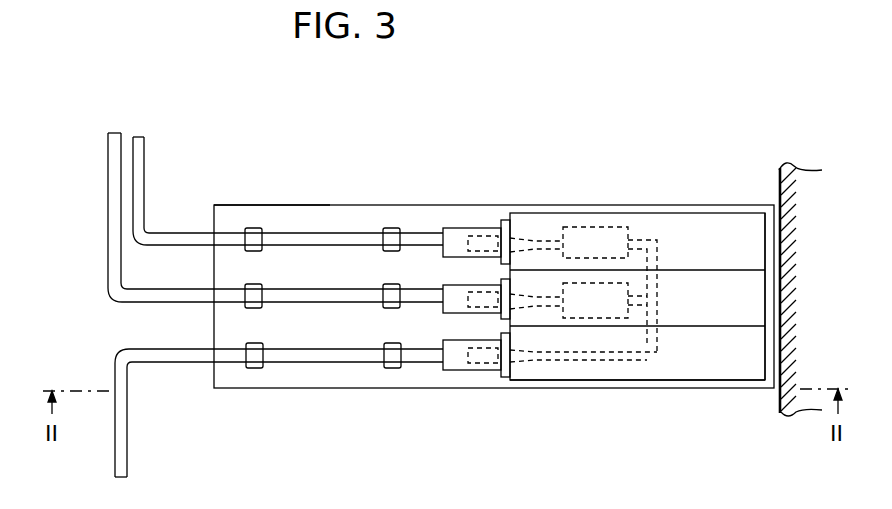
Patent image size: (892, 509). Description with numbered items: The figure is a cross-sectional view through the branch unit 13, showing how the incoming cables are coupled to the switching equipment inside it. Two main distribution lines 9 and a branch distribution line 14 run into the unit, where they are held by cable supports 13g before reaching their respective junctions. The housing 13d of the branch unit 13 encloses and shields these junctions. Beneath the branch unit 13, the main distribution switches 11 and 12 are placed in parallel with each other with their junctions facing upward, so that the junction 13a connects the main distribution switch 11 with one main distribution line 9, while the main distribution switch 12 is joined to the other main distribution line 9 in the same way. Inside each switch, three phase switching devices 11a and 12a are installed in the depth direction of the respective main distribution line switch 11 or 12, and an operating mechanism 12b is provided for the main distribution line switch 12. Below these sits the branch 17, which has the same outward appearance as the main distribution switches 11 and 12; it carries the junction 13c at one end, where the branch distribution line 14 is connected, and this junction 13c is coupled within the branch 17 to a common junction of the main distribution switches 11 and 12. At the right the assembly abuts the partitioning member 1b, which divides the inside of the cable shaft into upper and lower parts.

The partitioning member 1b is at (779, 190).
The main distribution lines 9 is at (108, 172).
The main distribution switch 11 is at (672, 230).
The switching devices 11a is at (603, 228).
The main distribution switch 12 is at (727, 293).
The switching devices 12a is at (583, 284).
The operating mechanism 12b is at (487, 284).
The branch unit 13 is at (346, 205).
The junction 13a is at (481, 229).
The junction 13c is at (480, 372).
The housing 13d is at (262, 205).
The cable supports 13g is at (254, 368).
The branch distribution line 14 is at (127, 466).
The branch 17 is at (704, 362).